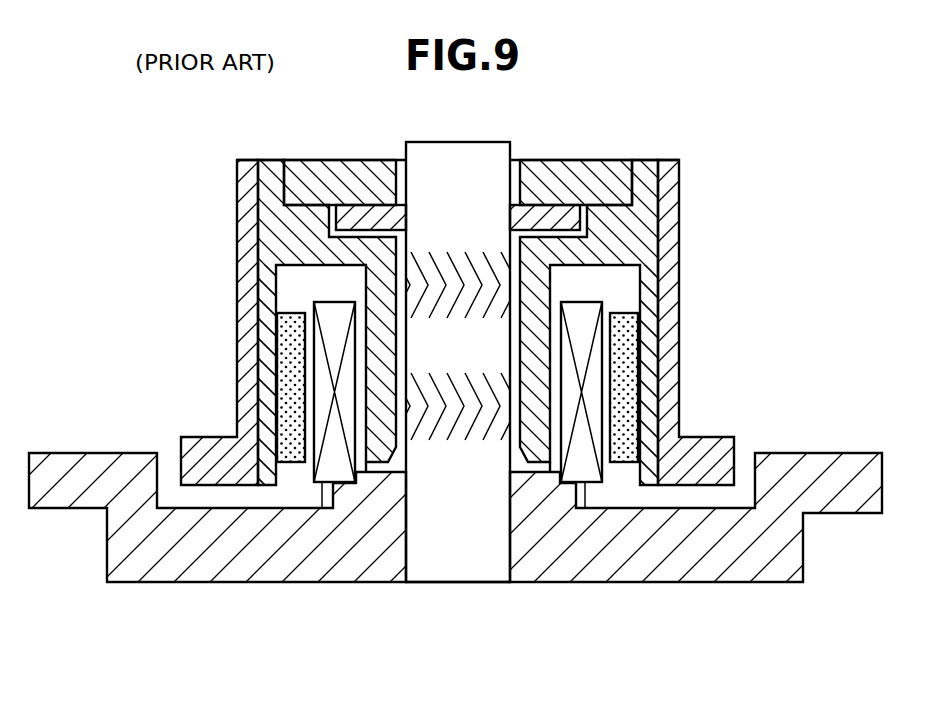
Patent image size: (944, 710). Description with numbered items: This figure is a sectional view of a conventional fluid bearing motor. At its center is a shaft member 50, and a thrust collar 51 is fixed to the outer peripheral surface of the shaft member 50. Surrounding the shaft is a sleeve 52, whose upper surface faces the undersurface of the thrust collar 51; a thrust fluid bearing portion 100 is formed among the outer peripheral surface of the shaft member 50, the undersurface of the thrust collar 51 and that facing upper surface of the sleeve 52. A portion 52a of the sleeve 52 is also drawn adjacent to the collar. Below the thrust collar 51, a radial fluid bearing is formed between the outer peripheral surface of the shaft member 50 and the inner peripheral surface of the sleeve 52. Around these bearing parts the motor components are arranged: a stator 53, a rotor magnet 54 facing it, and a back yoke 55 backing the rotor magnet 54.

The shaft member 50 is at (457, 572).
The thrust collar 51 is at (540, 212).
The sleeve 52 is at (645, 167).
The flange portion 52a is at (570, 210).
The stator 53 is at (318, 484).
The rotor magnet 54 is at (632, 330).
The back yoke 55 is at (647, 402).
The thrust fluid bearing portion 100 is at (680, 208).